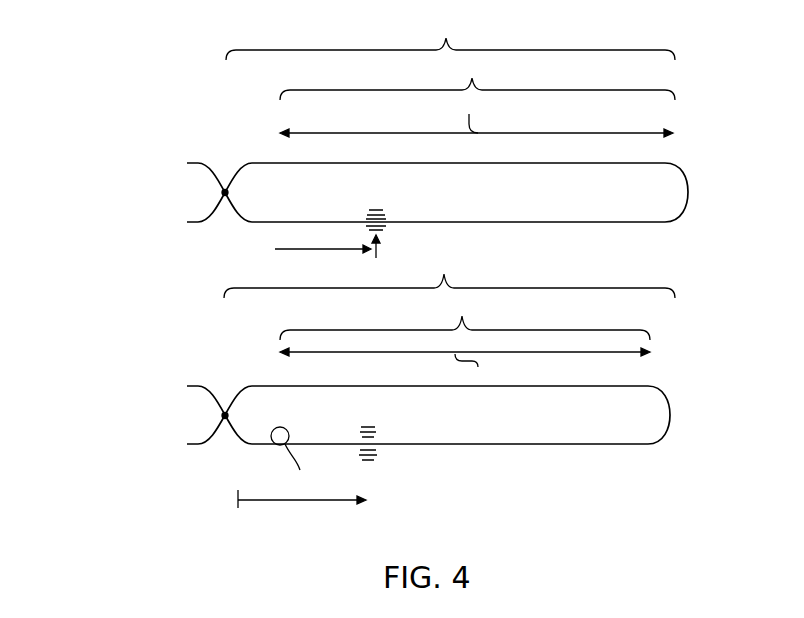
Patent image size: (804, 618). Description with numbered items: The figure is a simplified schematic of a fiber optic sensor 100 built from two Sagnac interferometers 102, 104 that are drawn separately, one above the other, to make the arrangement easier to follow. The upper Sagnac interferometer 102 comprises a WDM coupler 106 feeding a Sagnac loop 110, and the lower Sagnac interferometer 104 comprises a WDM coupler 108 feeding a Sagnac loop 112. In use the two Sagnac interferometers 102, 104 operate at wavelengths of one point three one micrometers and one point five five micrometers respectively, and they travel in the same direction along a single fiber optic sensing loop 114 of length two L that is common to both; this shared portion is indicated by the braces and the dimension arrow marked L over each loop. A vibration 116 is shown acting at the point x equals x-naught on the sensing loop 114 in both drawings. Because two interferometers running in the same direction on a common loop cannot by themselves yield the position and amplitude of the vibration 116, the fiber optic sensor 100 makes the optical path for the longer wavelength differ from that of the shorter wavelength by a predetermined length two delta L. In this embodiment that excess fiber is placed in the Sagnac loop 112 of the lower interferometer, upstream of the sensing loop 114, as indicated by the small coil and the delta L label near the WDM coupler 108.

The fiber optic sensor 100 is at (70, 178).
The Sagnac interferometer 102 is at (216, 123).
The Sagnac interferometer 104 is at (173, 343).
The WDM coupler 106 is at (230, 186).
The WDM coupler 108 is at (230, 409).
The Sagnac loop 110 is at (450, 37).
The Sagnac loop 112 is at (449, 274).
The fiber optic sensing loop 114 is at (477, 219).
The vibration 116 is at (389, 198).